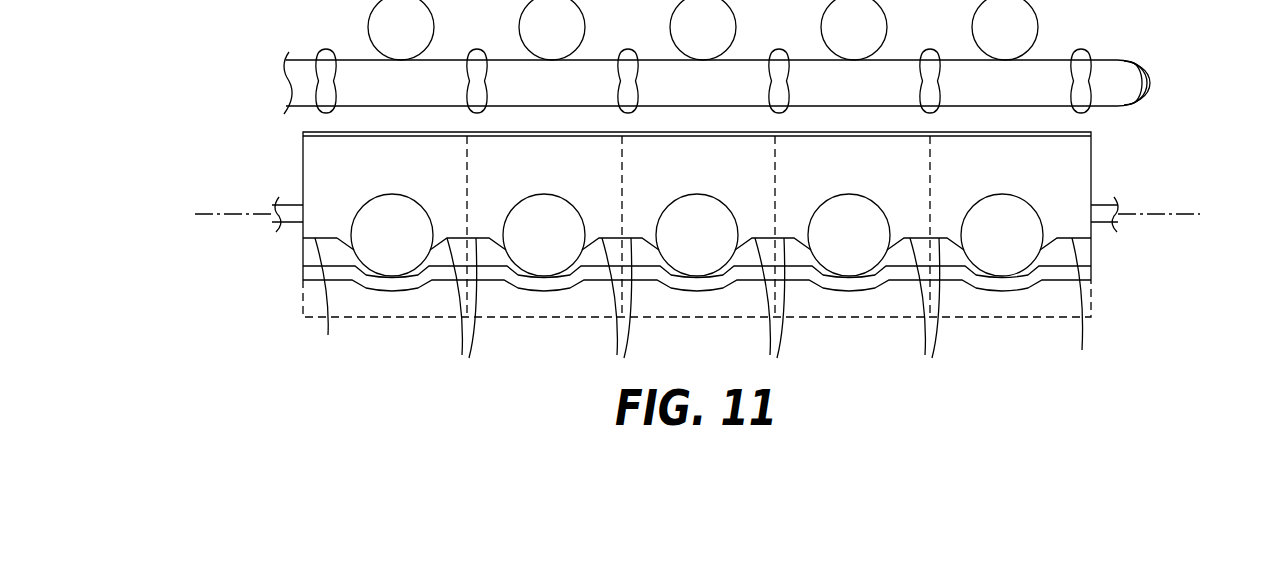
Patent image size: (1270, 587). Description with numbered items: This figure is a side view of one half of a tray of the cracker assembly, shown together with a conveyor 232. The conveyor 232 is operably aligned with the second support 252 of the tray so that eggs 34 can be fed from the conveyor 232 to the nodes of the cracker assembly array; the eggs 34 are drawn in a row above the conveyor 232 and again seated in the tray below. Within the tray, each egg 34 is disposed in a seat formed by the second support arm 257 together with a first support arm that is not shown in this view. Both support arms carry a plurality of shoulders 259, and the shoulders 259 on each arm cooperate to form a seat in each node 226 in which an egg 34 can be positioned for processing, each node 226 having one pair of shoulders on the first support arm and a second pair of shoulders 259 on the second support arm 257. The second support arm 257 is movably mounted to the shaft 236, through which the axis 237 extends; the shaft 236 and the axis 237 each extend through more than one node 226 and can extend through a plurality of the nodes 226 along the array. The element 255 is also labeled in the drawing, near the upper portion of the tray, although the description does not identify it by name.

The egg 34 is at (392, 36).
The conveyor 232 is at (1152, 103).
The second support 252 is at (1057, 163).
The upper shelf surface 255 is at (333, 160).
The second support arm 257 is at (302, 272).
The node 226 is at (380, 318).
The shoulders 259 is at (700, 312).
The axis 237 is at (204, 213).
The shaft 236 is at (1100, 220).